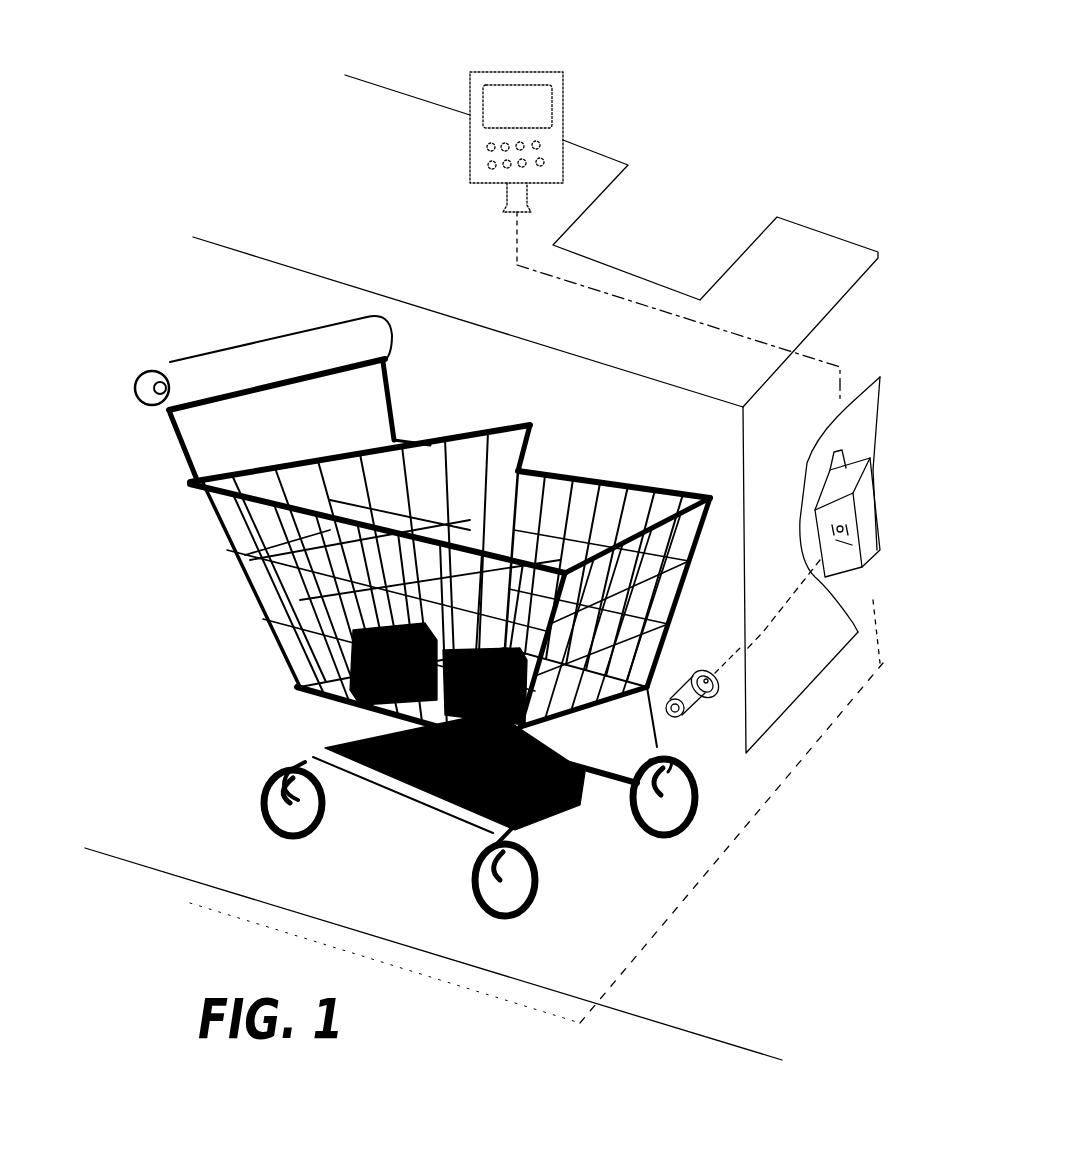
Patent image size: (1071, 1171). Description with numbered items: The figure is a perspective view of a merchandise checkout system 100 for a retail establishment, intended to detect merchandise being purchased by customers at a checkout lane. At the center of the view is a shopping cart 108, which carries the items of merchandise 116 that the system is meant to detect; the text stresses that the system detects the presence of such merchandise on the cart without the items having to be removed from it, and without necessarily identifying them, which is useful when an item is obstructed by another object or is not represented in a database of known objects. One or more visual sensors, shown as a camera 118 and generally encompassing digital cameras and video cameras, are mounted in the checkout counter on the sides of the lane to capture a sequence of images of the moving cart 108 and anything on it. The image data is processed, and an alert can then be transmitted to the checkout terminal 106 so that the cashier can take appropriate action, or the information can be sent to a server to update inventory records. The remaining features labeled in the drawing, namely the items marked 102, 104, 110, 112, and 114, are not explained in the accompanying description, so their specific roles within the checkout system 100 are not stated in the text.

The merchandise checkout system 100 is at (226, 188).
The floor 102 is at (707, 908).
The wall 104 is at (392, 258).
The checkout terminal 106 is at (565, 78).
The cart 108 is at (283, 457).
The basket 110 is at (250, 593).
The child seat 112 is at (320, 652).
The wheels 114 is at (590, 750).
The items of merchandise 116 is at (412, 790).
The camera 118 is at (737, 712).